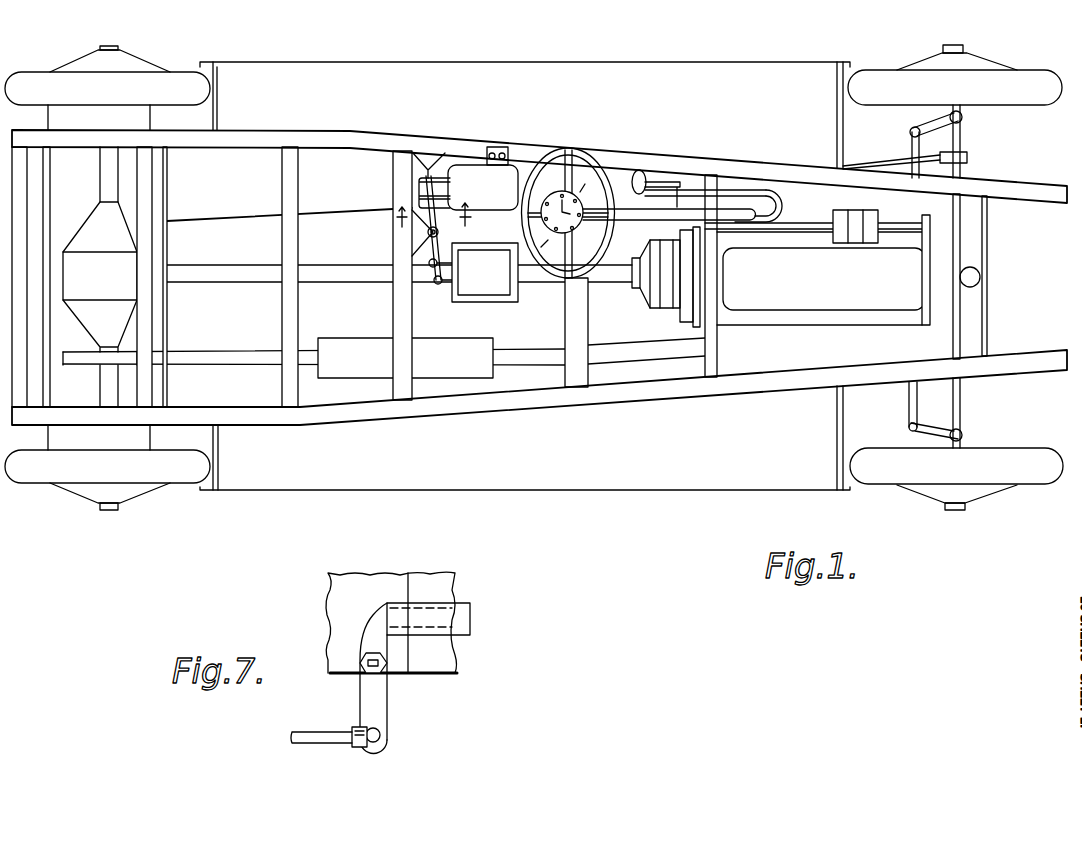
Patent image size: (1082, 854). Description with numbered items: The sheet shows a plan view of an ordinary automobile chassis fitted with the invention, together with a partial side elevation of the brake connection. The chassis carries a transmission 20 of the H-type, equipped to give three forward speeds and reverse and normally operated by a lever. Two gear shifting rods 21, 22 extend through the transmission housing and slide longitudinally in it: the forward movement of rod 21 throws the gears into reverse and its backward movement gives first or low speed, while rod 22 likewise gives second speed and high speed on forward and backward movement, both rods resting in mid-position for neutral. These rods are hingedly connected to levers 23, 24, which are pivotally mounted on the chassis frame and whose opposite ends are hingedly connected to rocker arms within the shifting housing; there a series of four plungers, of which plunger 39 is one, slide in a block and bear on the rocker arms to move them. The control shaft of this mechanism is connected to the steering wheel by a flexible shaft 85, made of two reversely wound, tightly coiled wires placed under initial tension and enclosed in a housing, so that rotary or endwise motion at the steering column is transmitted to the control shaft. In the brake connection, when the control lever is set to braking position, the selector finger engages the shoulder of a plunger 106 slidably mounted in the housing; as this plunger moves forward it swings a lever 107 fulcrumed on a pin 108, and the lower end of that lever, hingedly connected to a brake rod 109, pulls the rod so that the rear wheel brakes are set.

In FIG. 1, the transmission 20 is at (485, 284).
In FIG. 1, the gear shifting rod 21 is at (447, 283).
In FIG. 1, the gear shifting rod 22 is at (452, 266).
In FIG. 1, the lever 23 is at (432, 268).
In FIG. 1, the lever 24 is at (430, 258).
In FIG. 1, the plunger 39 is at (490, 206).
In FIG. 1, the flexible shaft 85 is at (784, 203).
In FIG. 7, the plunger 106 is at (471, 621).
In FIG. 7, the lever 107 is at (381, 694).
In FIG. 7, the pin 108 is at (360, 664).
In FIG. 7, the brake rod 109 is at (342, 745).